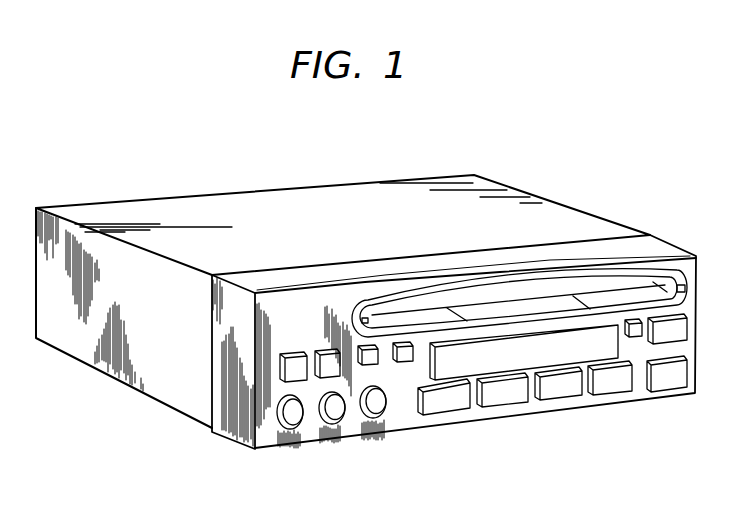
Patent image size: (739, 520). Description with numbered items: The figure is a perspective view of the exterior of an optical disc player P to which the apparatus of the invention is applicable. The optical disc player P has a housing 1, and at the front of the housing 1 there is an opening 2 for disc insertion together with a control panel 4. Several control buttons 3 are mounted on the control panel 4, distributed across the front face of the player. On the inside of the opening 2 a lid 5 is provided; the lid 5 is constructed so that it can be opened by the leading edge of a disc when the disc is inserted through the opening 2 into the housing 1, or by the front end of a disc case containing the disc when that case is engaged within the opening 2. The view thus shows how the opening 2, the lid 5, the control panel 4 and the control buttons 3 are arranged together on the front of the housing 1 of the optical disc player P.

The optical disc player P is at (247, 186).
The housing 1 is at (343, 192).
The opening 2 is at (473, 296).
The control buttons 3 is at (432, 413).
The control panel 4 is at (317, 305).
The lid 5 is at (513, 297).